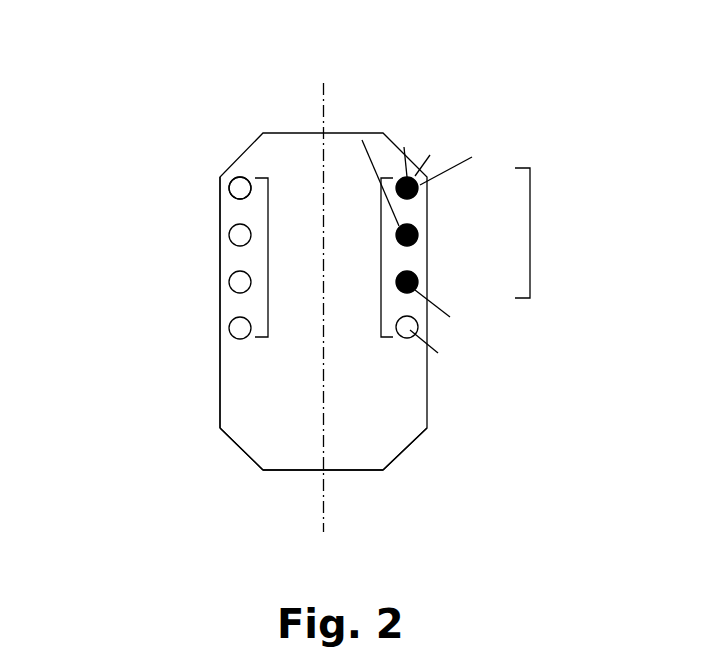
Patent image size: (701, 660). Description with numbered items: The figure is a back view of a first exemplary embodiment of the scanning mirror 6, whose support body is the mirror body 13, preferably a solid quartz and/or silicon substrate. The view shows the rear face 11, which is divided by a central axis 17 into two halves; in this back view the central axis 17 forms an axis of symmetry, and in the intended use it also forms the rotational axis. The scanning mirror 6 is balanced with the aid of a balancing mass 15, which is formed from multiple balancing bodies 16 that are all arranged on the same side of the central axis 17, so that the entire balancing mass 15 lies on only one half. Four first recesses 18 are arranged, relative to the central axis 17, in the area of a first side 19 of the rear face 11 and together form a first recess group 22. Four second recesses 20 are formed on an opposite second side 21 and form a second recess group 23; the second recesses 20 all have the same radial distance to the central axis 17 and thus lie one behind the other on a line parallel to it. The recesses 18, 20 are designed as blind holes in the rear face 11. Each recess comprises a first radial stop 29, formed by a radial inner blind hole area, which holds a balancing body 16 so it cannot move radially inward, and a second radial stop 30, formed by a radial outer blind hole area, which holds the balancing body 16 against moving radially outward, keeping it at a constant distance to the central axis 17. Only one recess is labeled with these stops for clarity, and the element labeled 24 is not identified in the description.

The scanning mirror 6 is at (133, 87).
The rear face 11 is at (380, 418).
The mirror body 13 is at (248, 398).
The balancing mass 15 is at (530, 236).
The balancing body 16 is at (418, 185).
The central axis 17 is at (325, 505).
The first recess 18 is at (362, 140).
The first side 19 is at (410, 400).
The second recess 20 is at (240, 188).
The second side 21 is at (242, 375).
The first recess group 22 is at (381, 258).
The second recess group 23 is at (268, 258).
The first receiver 24 is at (237, 185).
The first radial stop 29 is at (404, 147).
The second radial stop 30 is at (472, 157).